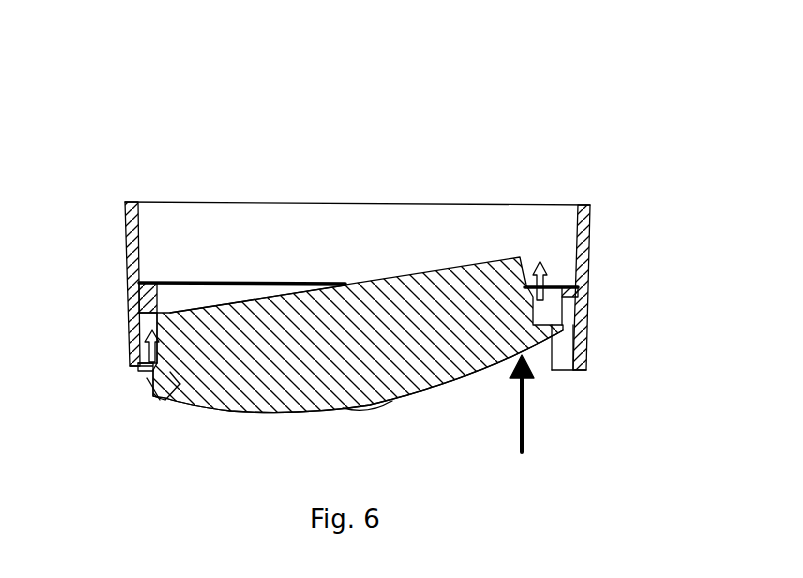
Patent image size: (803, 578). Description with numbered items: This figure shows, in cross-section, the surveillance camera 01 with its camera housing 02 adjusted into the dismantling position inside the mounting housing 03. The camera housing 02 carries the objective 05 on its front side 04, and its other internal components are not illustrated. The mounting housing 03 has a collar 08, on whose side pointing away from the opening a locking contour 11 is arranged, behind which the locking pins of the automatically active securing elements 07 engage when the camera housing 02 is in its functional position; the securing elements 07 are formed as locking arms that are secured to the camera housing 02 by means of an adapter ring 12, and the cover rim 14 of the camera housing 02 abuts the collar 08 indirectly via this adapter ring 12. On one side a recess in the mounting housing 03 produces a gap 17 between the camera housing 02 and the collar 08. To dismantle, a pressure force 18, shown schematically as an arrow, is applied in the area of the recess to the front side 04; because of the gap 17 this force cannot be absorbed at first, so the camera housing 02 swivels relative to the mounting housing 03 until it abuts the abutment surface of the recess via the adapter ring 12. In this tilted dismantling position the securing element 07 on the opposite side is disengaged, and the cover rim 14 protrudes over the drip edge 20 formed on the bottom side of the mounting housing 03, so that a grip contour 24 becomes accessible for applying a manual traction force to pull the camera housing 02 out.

The surveillance camera 01 is at (601, 90).
The camera housing 02 is at (467, 372).
The mounting housing 03 is at (587, 226).
The front side 04 is at (228, 414).
The objective 05 is at (368, 407).
The securing elements 07 is at (537, 262).
The collar 08 is at (218, 298).
The locking contour 11 is at (185, 282).
The adapter ring 12 is at (150, 380).
The cover rim 14 is at (553, 365).
The gap 17 is at (567, 307).
The pressure force 18 is at (525, 412).
The drip edge 20 is at (583, 370).
The grip contour 24 is at (146, 393).